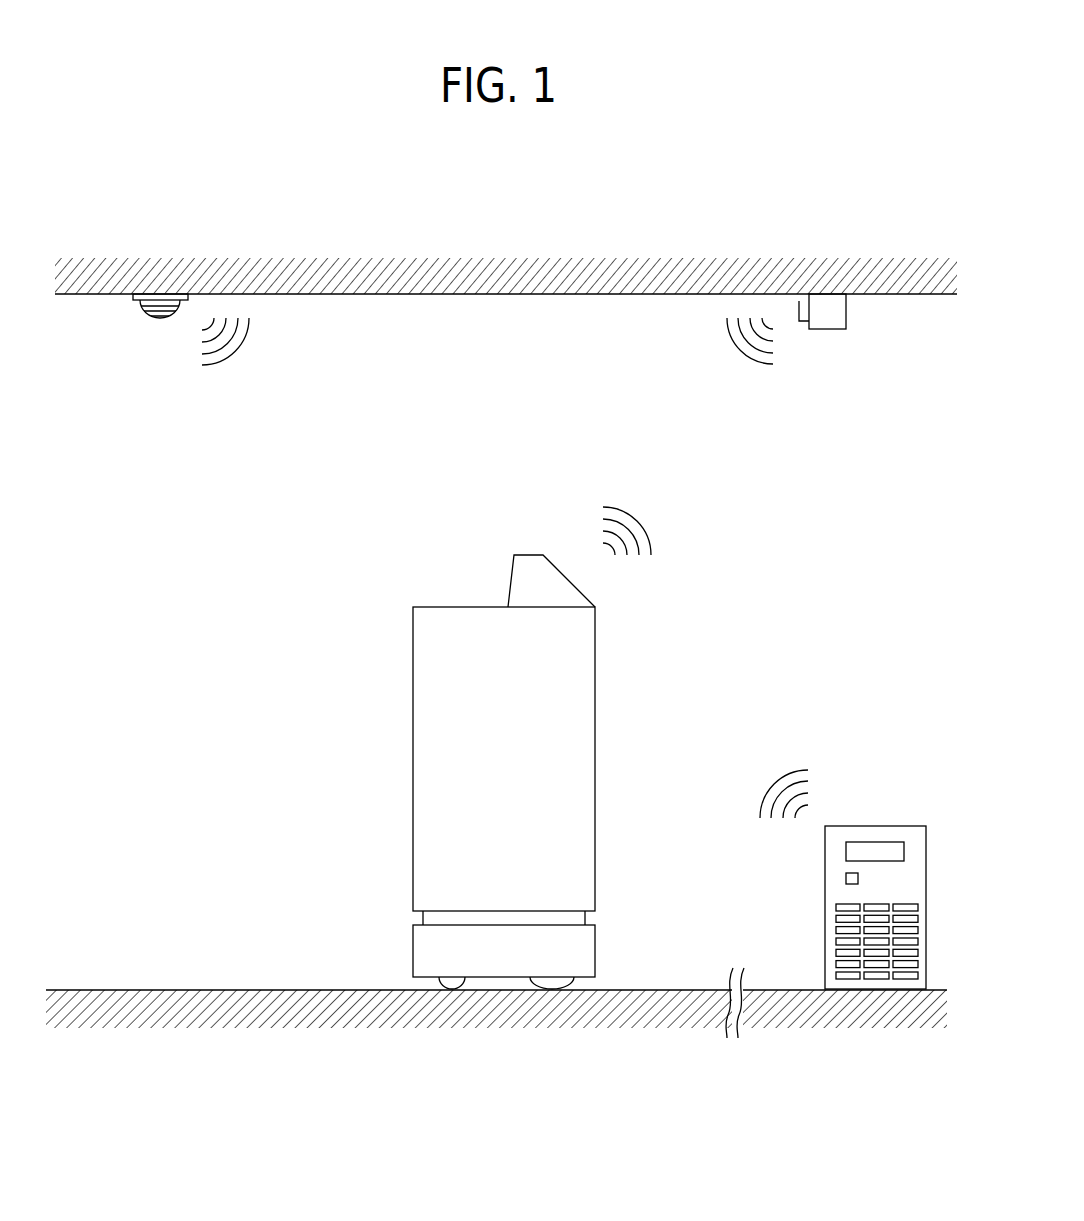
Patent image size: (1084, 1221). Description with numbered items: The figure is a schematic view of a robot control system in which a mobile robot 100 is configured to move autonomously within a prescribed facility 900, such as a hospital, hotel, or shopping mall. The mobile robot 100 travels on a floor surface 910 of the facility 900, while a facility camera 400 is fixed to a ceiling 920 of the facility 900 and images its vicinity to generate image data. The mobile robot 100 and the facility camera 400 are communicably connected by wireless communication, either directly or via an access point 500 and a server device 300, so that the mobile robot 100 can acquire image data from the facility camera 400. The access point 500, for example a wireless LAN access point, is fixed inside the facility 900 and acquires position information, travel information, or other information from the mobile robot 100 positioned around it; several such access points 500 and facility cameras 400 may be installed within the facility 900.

The mobile robot 100 is at (663, 652).
The server device 300 is at (905, 826).
The facility camera 400 is at (137, 308).
The access point 500 is at (826, 329).
The prescribed facility 900 is at (262, 250).
The floor surface 910 is at (338, 989).
The ceiling 920 is at (340, 294).